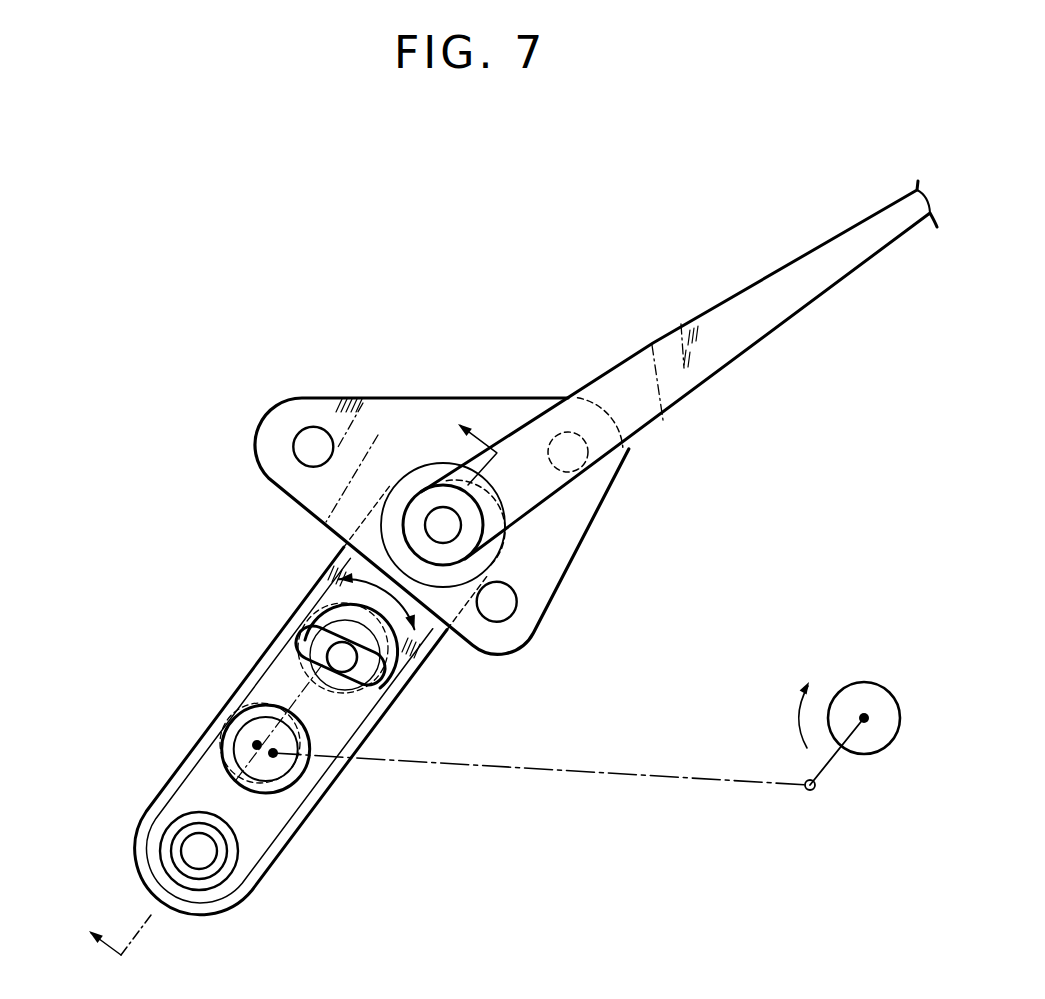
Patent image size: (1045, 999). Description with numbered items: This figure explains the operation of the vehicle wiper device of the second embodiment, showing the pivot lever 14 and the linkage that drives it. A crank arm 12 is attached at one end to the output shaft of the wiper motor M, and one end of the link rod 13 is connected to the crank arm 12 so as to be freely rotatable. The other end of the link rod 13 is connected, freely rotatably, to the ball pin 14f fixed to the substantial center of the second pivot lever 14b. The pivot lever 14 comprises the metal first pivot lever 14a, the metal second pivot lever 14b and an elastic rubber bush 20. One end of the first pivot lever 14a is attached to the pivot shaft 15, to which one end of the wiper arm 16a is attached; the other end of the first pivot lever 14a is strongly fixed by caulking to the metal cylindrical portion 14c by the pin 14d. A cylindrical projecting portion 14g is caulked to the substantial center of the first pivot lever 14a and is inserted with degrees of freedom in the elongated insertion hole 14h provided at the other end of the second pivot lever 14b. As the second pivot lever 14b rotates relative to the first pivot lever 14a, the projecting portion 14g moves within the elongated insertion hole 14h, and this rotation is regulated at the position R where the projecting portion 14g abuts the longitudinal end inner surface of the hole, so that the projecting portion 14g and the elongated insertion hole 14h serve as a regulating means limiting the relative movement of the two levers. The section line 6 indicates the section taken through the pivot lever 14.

The wiper arm 16a is at (752, 346).
The pivot shaft 15 is at (450, 525).
The pivot lever 14 is at (327, 794).
The first pivot lever 14a is at (437, 642).
The second pivot lever 14b is at (376, 714).
The cylindrical portion 14c is at (180, 840).
The pin 14d is at (196, 860).
The ball pin 14f is at (310, 716).
The projecting portion 14g is at (358, 668).
The elongated insertion hole 14h is at (318, 640).
The elastic rubber bush 20 is at (240, 863).
The link rod 13 is at (647, 777).
The crank arm 12 is at (833, 762).
The motor M is at (867, 693).
The section line 6- 6 is at (281, 681).
The position R is at (258, 648).